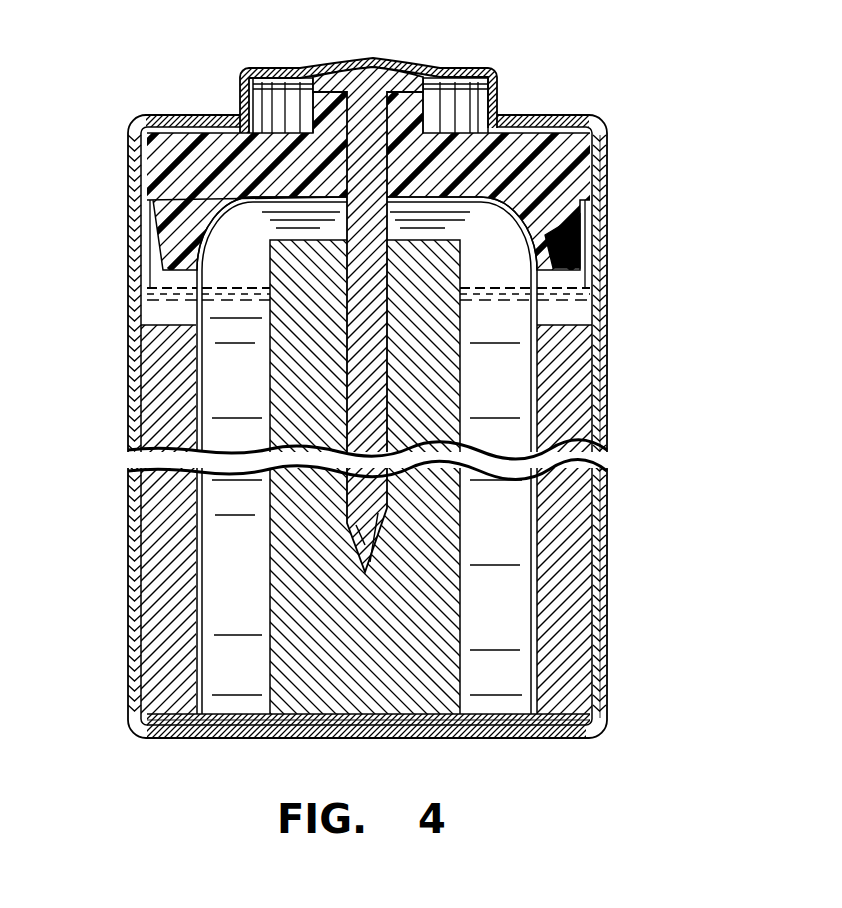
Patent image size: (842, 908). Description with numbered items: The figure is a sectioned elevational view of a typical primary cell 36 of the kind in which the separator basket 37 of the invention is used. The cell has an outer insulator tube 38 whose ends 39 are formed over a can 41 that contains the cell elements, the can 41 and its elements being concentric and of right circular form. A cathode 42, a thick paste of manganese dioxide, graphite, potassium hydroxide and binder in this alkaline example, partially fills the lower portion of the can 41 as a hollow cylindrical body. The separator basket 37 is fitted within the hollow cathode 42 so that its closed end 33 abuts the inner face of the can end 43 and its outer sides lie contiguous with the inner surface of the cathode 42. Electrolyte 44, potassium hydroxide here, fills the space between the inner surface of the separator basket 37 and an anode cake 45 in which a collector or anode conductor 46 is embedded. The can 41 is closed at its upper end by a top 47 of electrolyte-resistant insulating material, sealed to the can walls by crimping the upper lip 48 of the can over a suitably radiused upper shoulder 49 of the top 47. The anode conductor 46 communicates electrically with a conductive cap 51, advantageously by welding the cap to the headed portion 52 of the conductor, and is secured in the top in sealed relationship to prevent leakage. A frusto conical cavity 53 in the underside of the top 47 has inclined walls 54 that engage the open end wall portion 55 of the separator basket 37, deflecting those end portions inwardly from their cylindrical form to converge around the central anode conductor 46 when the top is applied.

The closed end 33 is at (424, 716).
The primary cell 36 is at (552, 89).
The separator basket 37 is at (540, 405).
The outer insulator tube 38 is at (140, 298).
The ends 39 is at (172, 113).
The can 41 is at (137, 183).
The cathode 42 is at (152, 550).
The can end 43 is at (282, 715).
The electrolyte 44 is at (509, 363).
The anode cake 45 is at (372, 649).
The anode conductor 46 is at (387, 520).
The top 47 is at (577, 182).
The upper lip 48 is at (578, 117).
The upper shoulder 49 is at (608, 150).
The conductive cap 51 is at (280, 68).
The headed portion 52 is at (383, 82).
The frusto conical cavity 53 is at (553, 262).
The inclined walls 54 is at (545, 252).
The open end wall portion 55 is at (497, 216).